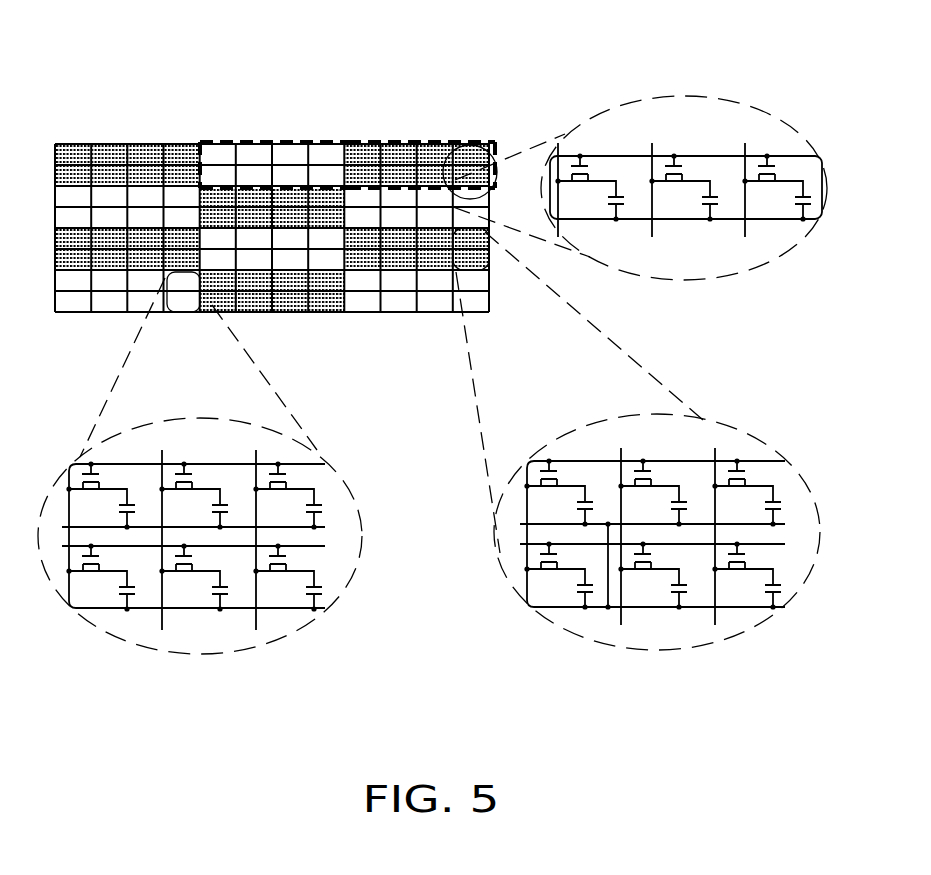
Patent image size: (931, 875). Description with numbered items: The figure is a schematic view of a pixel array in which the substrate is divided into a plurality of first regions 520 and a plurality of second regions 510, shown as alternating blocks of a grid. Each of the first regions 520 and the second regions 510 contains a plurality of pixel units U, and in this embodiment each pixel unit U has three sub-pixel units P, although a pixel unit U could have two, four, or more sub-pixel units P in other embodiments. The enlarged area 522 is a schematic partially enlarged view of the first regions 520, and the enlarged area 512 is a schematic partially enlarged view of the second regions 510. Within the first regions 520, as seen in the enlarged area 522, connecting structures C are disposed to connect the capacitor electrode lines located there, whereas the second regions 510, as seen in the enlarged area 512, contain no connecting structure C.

The second regions 510 is at (283, 134).
The first regions 520 is at (397, 134).
The schematic partially enlarged view of the second regions 512 is at (195, 415).
The schematic partially enlarged view of the first regions 522 is at (765, 440).
The pixel unit U is at (214, 150).
The sub-pixel unit P is at (775, 131).
The connecting structure C is at (617, 590).